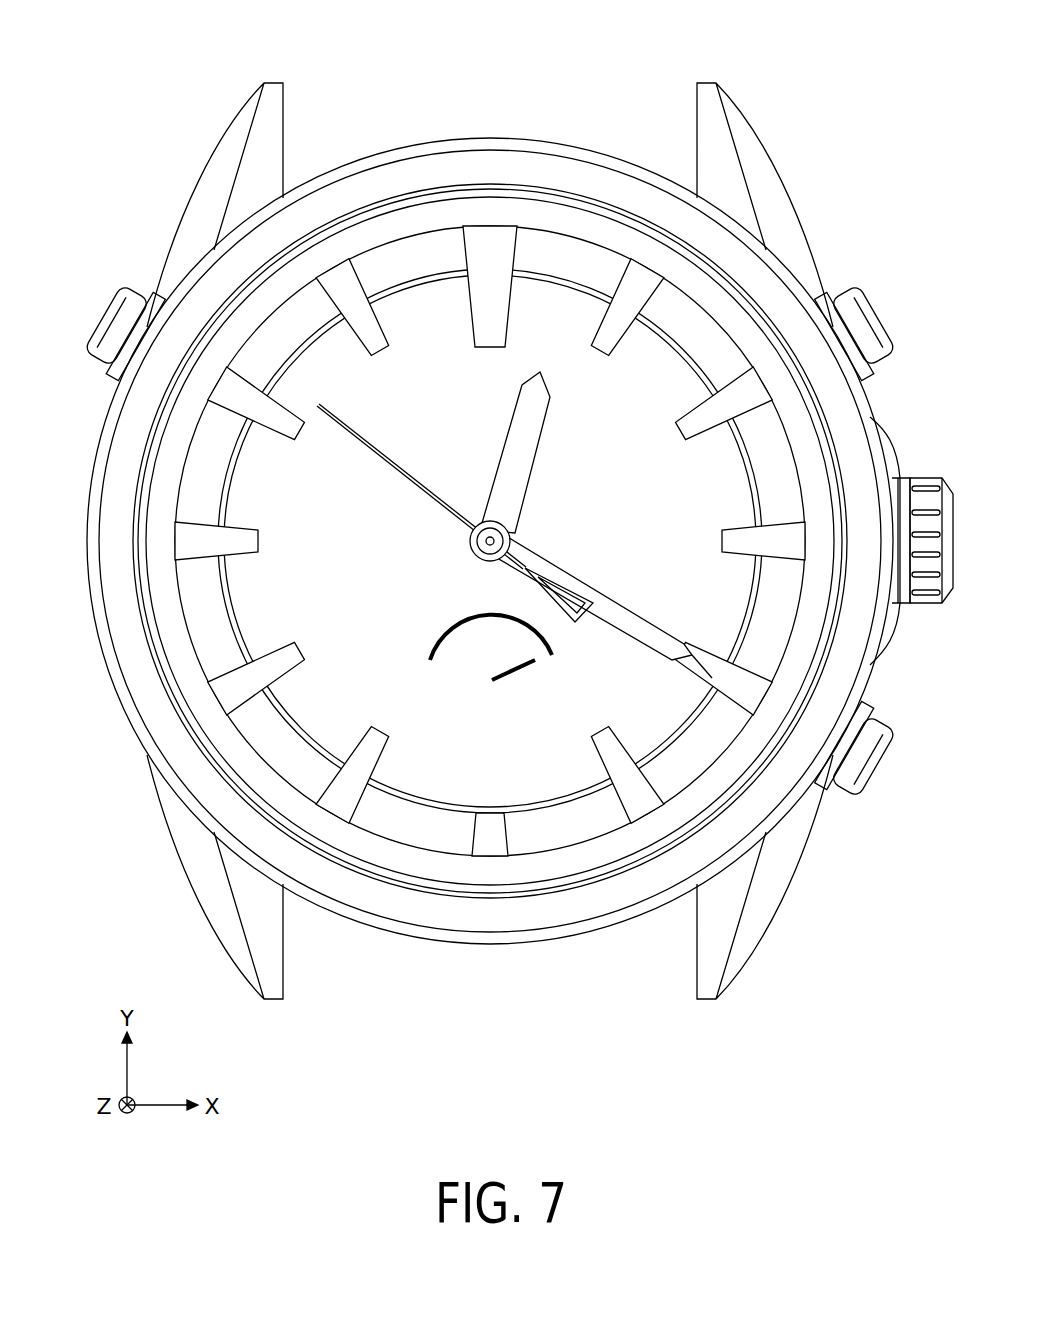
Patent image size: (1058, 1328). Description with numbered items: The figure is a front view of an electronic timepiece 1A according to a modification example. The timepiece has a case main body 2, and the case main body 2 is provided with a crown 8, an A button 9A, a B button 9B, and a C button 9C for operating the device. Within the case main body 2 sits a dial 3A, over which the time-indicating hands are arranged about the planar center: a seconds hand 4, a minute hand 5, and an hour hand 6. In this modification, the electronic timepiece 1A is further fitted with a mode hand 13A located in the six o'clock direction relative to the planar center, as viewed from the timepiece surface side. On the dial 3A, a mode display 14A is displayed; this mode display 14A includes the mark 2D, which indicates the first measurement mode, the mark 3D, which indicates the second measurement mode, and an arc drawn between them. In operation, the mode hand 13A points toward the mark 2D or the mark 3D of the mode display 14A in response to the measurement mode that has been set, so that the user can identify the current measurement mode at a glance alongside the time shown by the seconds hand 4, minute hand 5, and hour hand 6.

The electronic timepiece 1A is at (501, 513).
The case main body 2 is at (583, 120).
The dial 3A is at (258, 599).
The seconds hand 4 is at (455, 531).
The minute hand 5 is at (622, 608).
The hour hand 6 is at (538, 447).
The crown 8 is at (924, 475).
The A button 9A is at (878, 312).
The B button 9B is at (880, 768).
The C button 9C is at (103, 312).
The mode hand 13A is at (514, 680).
The mode display 14A is at (453, 640).
The mark indicating the first measurement mode 2D is at (471, 637).
The mark indicating the second measurement mode 3D is at (559, 613).